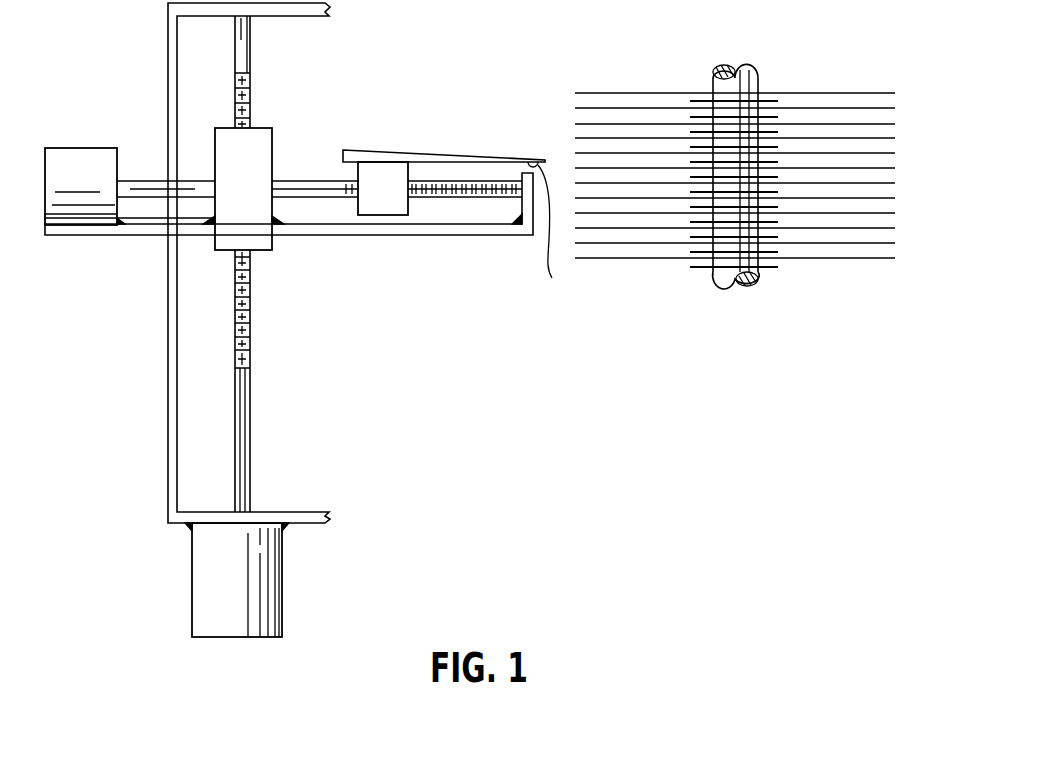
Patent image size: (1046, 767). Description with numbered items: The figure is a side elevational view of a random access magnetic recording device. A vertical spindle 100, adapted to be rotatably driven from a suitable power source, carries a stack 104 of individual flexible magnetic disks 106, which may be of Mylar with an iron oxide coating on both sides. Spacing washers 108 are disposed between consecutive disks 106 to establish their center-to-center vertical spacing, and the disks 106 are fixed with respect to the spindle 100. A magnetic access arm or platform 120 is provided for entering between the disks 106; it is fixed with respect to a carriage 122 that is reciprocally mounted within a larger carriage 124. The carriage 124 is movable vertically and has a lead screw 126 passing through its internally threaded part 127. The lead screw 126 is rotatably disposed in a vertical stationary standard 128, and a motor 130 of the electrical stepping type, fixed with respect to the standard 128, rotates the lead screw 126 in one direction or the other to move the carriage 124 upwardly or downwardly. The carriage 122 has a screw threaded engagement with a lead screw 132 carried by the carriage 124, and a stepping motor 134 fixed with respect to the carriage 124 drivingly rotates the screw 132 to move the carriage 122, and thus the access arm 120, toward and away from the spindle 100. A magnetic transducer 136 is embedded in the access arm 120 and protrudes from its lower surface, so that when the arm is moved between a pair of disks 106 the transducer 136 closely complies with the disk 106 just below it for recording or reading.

The spindle 100 is at (717, 285).
The stack 104 is at (636, 82).
The magnetic disks 106 is at (823, 92).
The spacing washers 108 is at (697, 100).
The access arm 120 is at (456, 149).
The carriage 122 is at (395, 197).
The carriage 124 is at (468, 236).
The lead screw 126 is at (250, 428).
The internally threaded part 127 is at (260, 128).
The standard 128 is at (167, 434).
The motor 130 is at (282, 580).
The lead screw 132 is at (302, 181).
The motor 134 is at (78, 148).
The magnetic transducer 136 is at (547, 234).